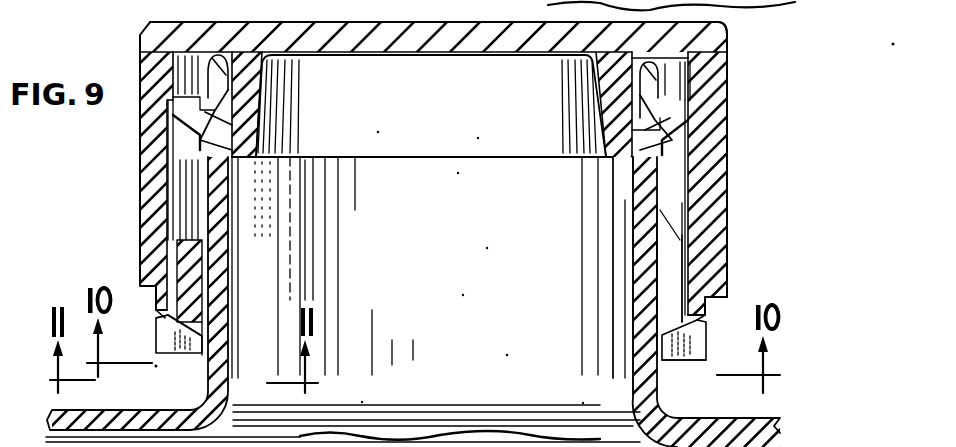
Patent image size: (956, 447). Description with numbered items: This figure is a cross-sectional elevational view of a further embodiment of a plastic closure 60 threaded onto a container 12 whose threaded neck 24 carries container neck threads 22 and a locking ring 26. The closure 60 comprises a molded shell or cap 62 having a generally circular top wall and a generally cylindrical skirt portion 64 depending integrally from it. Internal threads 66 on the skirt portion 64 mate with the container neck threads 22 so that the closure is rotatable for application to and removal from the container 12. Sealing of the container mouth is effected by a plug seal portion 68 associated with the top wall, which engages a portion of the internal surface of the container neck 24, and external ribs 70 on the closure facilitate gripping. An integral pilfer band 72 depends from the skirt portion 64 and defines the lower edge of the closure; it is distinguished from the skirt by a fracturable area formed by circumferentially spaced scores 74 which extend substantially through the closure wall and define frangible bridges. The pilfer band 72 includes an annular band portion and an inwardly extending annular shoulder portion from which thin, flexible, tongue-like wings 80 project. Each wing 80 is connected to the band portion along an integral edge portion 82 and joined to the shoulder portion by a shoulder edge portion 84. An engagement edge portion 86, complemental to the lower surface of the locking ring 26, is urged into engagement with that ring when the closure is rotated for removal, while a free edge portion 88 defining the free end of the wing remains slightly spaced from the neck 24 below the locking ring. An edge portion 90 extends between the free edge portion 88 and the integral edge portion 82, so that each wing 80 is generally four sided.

The container 12 is at (678, 403).
The container neck threads 22 is at (226, 158).
The threaded neck 24 is at (626, 357).
The locking ring 26 is at (187, 280).
The plastic closure 60 is at (732, 42).
The molded shell or cap 62 is at (732, 105).
The skirt portion 64 is at (700, 163).
The internal threads 66 is at (182, 148).
The plug seal portion 68 is at (500, 42).
The external ribs 70 is at (183, 125).
The pilfer band 72 is at (153, 324).
The scores 74 is at (157, 310).
The wings or fingers 80 is at (180, 358).
The integral edge portion 82 is at (698, 338).
The shoulder edge portion 84 is at (660, 327).
The engagement edge portion 86 is at (182, 320).
The free edge portion 88 is at (200, 346).
The edge portion 90 is at (674, 360).